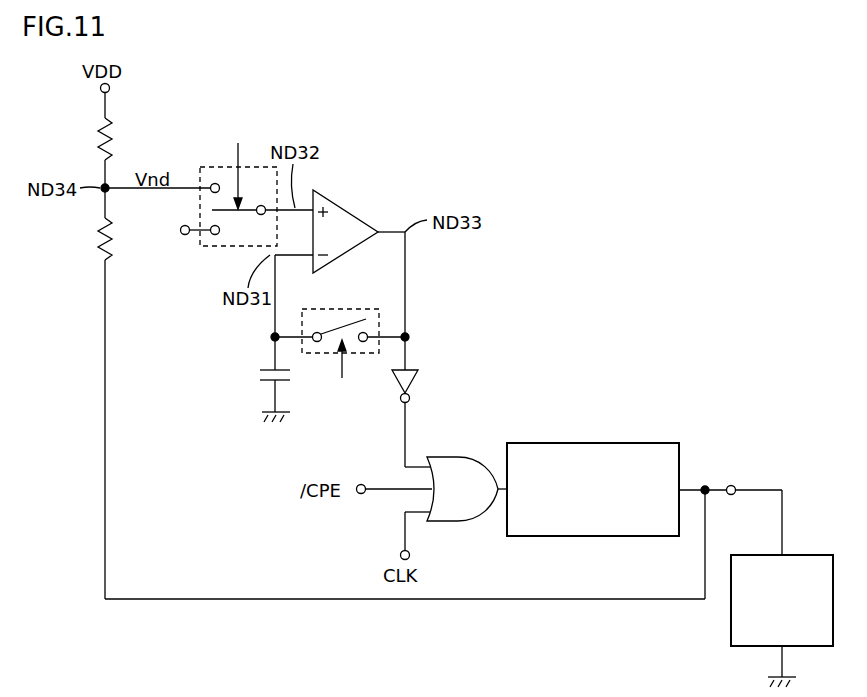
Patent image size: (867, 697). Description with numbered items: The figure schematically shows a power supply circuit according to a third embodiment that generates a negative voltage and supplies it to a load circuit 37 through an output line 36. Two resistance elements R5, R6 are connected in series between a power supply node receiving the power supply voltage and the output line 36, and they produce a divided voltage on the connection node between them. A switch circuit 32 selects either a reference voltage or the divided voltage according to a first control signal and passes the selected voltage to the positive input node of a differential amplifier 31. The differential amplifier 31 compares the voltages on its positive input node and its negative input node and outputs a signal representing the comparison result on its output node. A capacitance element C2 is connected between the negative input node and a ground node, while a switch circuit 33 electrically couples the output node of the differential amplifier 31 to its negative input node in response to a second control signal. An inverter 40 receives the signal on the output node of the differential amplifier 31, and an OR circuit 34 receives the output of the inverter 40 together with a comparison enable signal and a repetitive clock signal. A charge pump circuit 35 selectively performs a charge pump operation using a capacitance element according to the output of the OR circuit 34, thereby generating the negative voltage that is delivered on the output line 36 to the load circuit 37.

The differential amplifier 31 is at (349, 208).
The switch circuit 32 is at (212, 247).
The switch circuit 33 is at (368, 309).
The OR circuit 34 is at (478, 468).
The charge pump circuit 35 is at (598, 443).
The output line 36 is at (765, 488).
The load circuit 37 is at (810, 554).
The inverter 40 is at (416, 382).
The resistance element R5 is at (91, 139).
The resistance element R6 is at (91, 239).
The capacitance element C2 is at (270, 368).